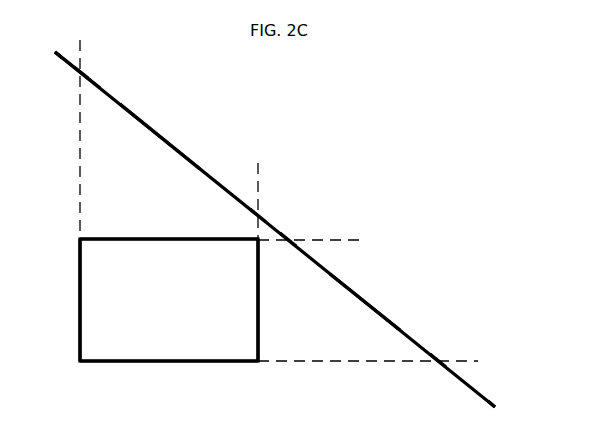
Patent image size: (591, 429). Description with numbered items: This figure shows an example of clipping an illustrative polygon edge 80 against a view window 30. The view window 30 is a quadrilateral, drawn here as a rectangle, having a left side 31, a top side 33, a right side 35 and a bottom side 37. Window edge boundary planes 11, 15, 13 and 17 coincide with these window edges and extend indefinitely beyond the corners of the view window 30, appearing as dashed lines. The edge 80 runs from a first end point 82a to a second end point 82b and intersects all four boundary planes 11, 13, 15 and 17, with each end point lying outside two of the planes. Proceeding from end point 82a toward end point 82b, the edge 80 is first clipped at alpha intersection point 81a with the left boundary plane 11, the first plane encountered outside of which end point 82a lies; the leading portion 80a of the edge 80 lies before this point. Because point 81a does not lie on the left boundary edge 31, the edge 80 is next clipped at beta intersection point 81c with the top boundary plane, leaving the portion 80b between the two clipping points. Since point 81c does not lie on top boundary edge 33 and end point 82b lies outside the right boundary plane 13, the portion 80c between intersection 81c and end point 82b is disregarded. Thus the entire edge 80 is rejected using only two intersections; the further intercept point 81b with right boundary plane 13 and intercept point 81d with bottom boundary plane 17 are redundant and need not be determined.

The left boundary plane 11 is at (84, 49).
The right boundary plane 13 is at (261, 170).
The top boundary plane 15 is at (351, 234).
The bottom boundary plane 17 is at (471, 360).
The view window 30 is at (169, 300).
The left side 31 is at (76, 265).
The top side 33 is at (106, 237).
The right side 35 is at (278, 300).
The bottom side 37 is at (91, 366).
The edge 80 is at (122, 106).
The first portion of edge 80a is at (60, 70).
The intermediate portion of edge 80b is at (173, 143).
The portion of edge 80c is at (358, 292).
The alpha intersection point 81a is at (83, 70).
The intercept point 81b is at (261, 211).
The beta intersection point 81c is at (288, 238).
The intercept point 81d is at (439, 355).
The first end point 82a is at (56, 48).
The second end point 82b is at (495, 406).